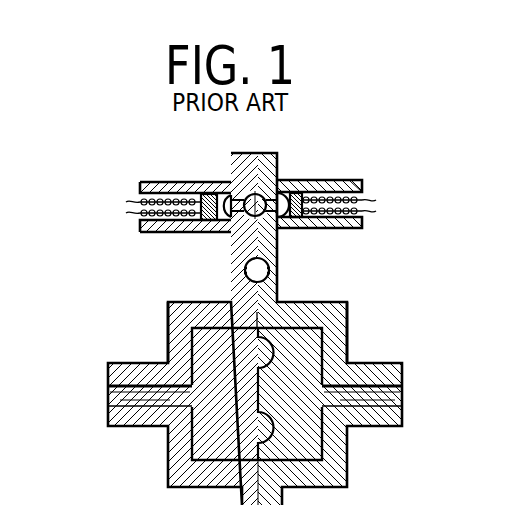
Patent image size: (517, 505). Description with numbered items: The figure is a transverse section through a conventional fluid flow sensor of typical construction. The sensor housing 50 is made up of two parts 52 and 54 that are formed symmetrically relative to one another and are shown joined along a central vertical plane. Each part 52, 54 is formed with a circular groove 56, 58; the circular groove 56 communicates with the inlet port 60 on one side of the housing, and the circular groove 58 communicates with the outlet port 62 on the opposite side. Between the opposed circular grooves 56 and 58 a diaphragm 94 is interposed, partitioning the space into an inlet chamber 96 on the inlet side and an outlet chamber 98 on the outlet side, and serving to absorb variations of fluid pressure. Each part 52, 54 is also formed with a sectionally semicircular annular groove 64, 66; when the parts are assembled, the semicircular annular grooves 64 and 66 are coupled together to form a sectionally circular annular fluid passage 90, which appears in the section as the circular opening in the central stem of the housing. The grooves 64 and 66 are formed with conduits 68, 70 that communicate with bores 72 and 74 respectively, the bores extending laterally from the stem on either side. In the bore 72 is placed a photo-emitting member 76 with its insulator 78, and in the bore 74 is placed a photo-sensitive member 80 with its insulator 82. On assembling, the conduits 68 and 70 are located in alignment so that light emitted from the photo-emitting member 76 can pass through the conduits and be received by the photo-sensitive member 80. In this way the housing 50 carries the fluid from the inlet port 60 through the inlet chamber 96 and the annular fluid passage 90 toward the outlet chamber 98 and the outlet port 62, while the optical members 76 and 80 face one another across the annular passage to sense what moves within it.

The sensor housing 50 is at (348, 299).
The housing part 52 is at (167, 312).
The housing part 54 is at (347, 315).
The circular groove 56 is at (192, 440).
The circular groove 58 is at (322, 446).
The inlet port 60 is at (118, 397).
The outlet port 62 is at (395, 388).
The semicircular annular groove 64 is at (243, 271).
The semicircular annular groove 66 is at (271, 270).
The conduit 68 is at (233, 181).
The conduit 70 is at (290, 191).
The bore 72 is at (163, 198).
The bore 74 is at (355, 180).
The photo-emitting member 76 is at (224, 229).
The insulator 78 is at (210, 193).
The photo-sensitive member 80 is at (284, 218).
The insulator 82 is at (303, 188).
The annular fluid passage 90 is at (263, 187).
The diaphragm 94 is at (258, 385).
The inlet chamber 96 is at (210, 399).
The outlet chamber 98 is at (291, 424).